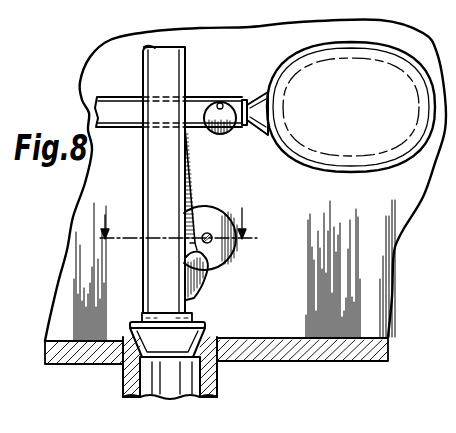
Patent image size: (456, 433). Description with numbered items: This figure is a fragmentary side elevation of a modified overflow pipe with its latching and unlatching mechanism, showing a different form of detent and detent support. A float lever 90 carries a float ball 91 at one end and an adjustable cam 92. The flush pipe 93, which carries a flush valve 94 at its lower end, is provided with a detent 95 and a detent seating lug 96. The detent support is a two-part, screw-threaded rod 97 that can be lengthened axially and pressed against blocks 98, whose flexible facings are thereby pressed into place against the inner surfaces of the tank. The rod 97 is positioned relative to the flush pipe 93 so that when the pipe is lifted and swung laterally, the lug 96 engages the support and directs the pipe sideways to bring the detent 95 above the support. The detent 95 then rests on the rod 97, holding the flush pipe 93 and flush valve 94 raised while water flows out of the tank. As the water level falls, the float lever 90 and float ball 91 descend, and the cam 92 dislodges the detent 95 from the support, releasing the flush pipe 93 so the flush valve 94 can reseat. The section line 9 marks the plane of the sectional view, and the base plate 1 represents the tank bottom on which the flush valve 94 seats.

The base plate 1 is at (338, 350).
The section line 9 is at (177, 211).
The float lever 90 is at (197, 105).
The float ball 91 is at (351, 107).
The adjustable cam 92 is at (229, 131).
The flush pipe 93 is at (166, 148).
The flush valve 94 is at (138, 325).
The detent 95 is at (191, 226).
The detent seating lug 96 is at (206, 281).
The two-part screw-threaded rod 97 is at (213, 241).
The blocks 98 is at (233, 259).